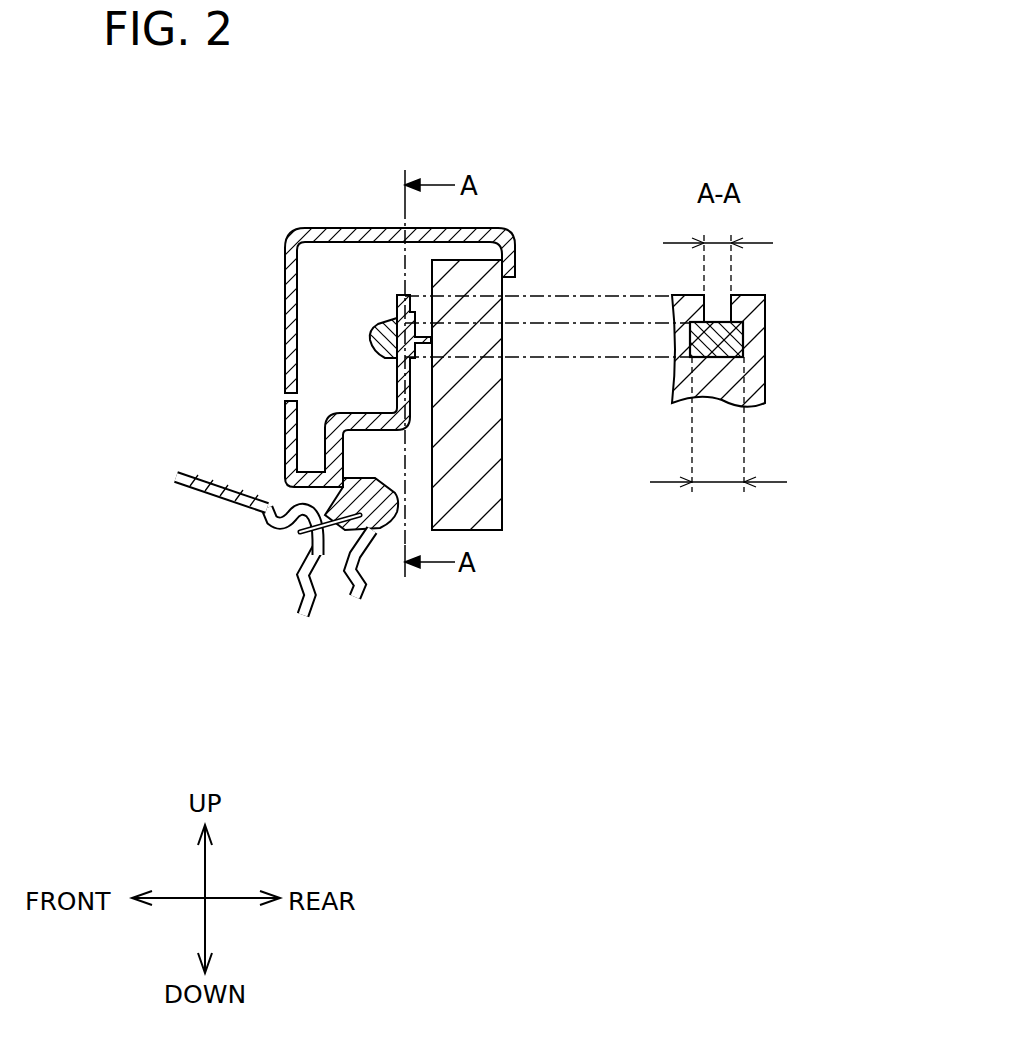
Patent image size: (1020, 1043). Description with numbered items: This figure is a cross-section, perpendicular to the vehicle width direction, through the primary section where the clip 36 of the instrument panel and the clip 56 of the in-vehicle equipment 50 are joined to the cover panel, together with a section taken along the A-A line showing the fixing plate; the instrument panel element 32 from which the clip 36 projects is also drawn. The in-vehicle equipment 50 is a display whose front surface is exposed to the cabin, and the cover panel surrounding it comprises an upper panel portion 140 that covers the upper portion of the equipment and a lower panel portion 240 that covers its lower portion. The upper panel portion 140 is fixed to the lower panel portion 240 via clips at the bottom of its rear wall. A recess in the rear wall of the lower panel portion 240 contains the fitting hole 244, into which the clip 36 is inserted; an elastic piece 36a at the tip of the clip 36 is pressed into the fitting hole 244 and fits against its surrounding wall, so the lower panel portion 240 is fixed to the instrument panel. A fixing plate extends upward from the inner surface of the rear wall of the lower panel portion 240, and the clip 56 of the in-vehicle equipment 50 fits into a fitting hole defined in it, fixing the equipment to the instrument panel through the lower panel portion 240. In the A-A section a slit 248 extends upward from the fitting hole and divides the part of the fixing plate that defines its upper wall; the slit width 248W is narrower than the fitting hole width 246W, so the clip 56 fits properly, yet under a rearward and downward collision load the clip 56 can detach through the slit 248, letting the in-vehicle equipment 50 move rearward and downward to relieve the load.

The panel 32 is at (200, 490).
The clip 36 is at (302, 512).
The elastic piece 36a is at (268, 513).
The in-vehicle equipment 50 is at (488, 447).
The clip 56 is at (383, 342).
The upper panel portion 140 is at (285, 255).
The lower panel portion 240 is at (285, 430).
The fitting hole 244 is at (325, 553).
The width of fitting hole 246W is at (717, 482).
The slit 248 is at (705, 312).
The width of slit 248W is at (717, 243).